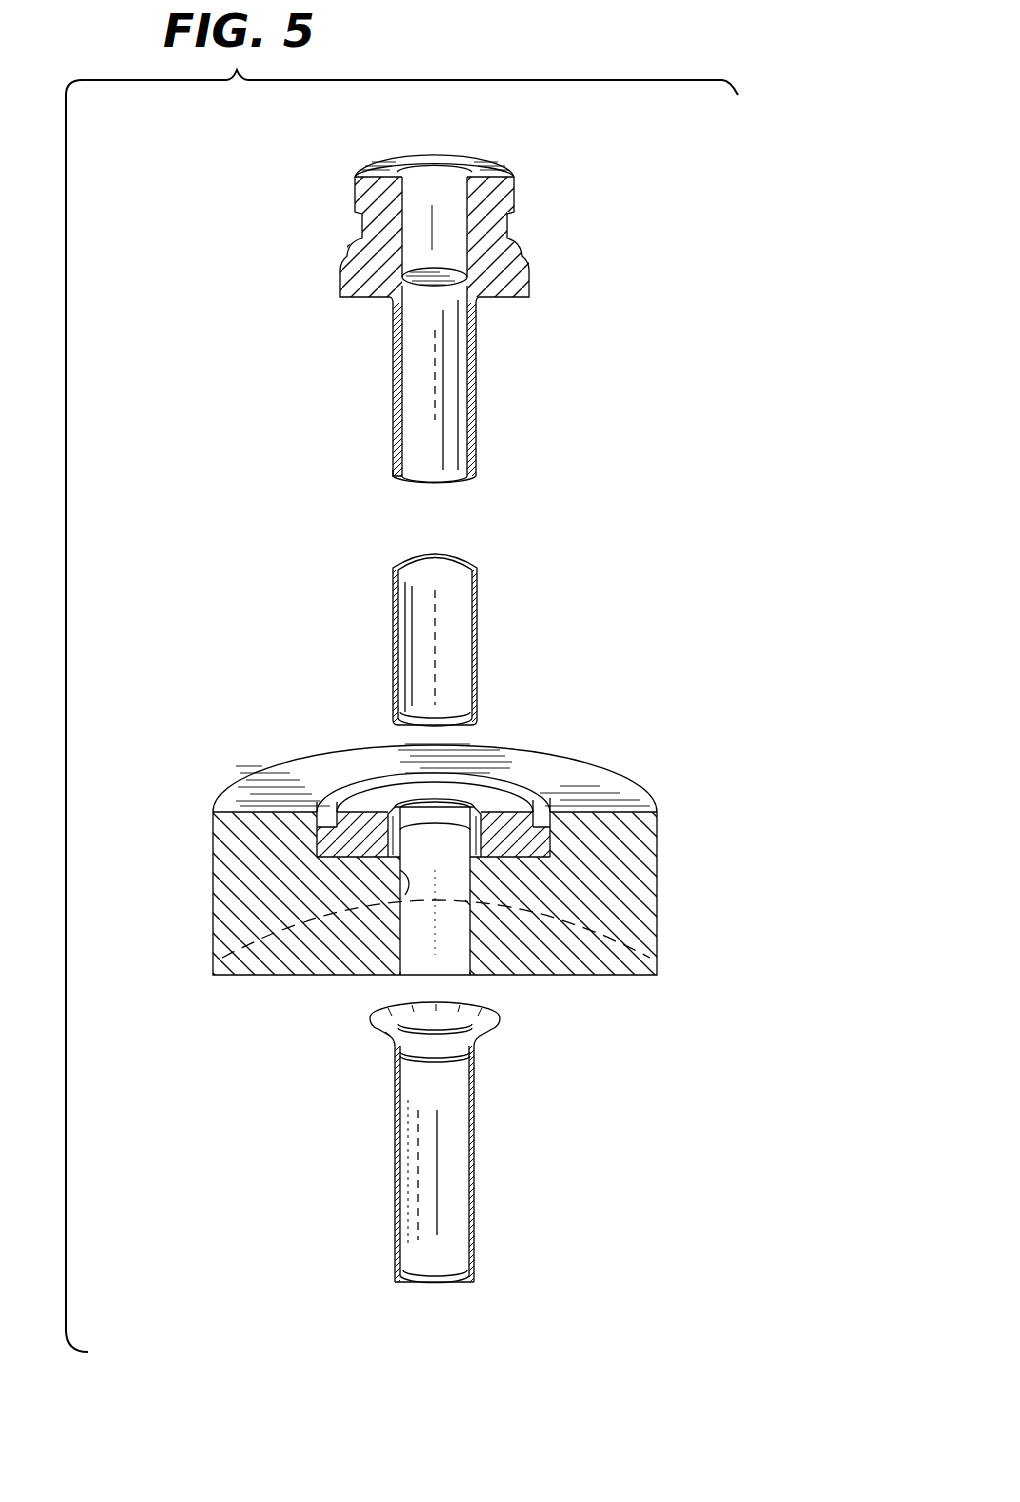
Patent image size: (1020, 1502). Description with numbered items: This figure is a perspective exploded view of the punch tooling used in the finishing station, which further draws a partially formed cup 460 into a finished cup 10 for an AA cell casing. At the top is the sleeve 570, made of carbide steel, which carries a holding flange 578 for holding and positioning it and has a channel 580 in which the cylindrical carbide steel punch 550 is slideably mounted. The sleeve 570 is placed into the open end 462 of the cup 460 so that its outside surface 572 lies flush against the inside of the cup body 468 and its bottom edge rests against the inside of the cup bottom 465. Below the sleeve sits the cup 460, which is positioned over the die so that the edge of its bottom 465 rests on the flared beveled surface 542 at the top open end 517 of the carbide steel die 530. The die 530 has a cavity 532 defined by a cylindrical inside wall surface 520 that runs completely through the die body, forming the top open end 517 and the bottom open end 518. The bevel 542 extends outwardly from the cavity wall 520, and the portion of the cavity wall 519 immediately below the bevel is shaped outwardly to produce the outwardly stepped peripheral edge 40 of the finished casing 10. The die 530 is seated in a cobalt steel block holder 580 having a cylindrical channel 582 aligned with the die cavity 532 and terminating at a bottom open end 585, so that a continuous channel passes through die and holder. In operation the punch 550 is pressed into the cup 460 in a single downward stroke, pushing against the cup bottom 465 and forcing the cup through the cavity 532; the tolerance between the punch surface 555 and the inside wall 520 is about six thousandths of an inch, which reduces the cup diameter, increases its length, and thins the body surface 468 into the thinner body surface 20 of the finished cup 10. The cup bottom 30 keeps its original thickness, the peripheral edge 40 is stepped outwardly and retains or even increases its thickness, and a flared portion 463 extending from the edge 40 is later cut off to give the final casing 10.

The finished cup 10 is at (475, 1117).
The body surface 20 is at (395, 1170).
The cup bottom 30 is at (410, 1283).
The outwardly stepped peripheral edge 40 is at (476, 1038).
The cup 460 is at (392, 636).
The open end 462 is at (460, 558).
The flared portion 463 is at (392, 1034).
The cup bottom 465 is at (470, 725).
The cup body surface 468 is at (478, 611).
The top open end 517 is at (470, 810).
The bottom open end 518 is at (460, 858).
The die cavity wall portion 519 is at (460, 812).
The cylindrical inside wall surface 520 is at (420, 848).
The die 530 is at (320, 842).
The cavity 532 is at (470, 905).
The flared beveled surface 542 is at (425, 812).
The punch 550 is at (468, 483).
The punch surface 555 is at (400, 478).
The sleeve 570 is at (478, 345).
The outside surface of sleeve 572 is at (478, 405).
The holding flange 578 is at (345, 284).
The holder 580 is at (447, 183).
The cylindrical channel 582 is at (470, 978).
The bottom open end 585 is at (400, 978).